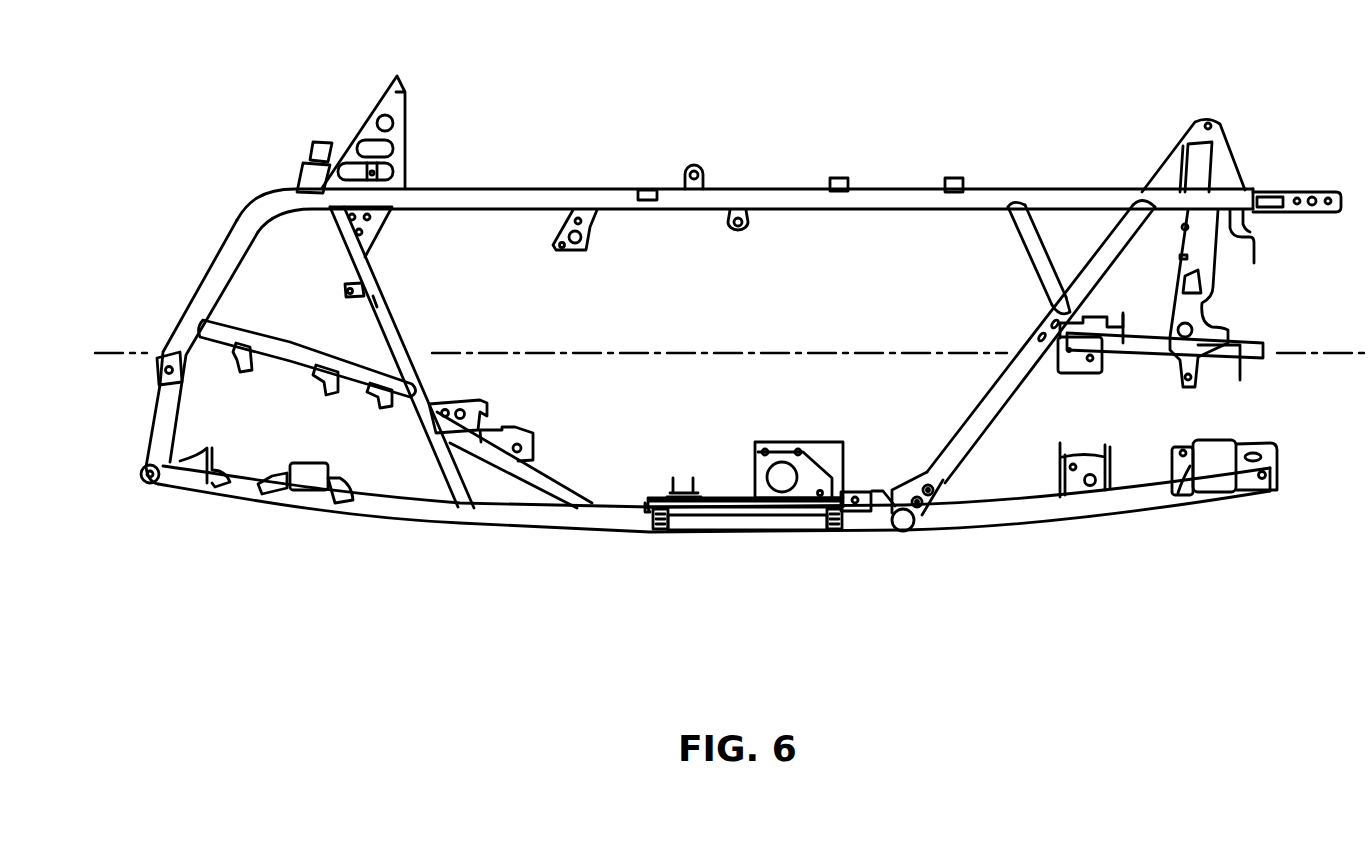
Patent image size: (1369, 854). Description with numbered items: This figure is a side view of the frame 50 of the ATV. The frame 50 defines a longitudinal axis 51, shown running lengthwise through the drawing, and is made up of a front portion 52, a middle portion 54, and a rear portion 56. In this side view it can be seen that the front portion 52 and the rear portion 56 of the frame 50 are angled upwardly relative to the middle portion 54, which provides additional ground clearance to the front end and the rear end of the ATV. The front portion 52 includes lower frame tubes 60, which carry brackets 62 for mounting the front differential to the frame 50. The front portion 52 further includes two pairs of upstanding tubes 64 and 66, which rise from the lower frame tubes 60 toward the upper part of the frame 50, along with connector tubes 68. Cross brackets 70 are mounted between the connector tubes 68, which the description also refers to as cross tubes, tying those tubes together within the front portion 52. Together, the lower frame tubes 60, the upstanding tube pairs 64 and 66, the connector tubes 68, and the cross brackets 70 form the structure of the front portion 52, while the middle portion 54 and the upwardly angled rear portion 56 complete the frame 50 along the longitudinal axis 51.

The frame 50 is at (885, 112).
The longitudinal axis 51 is at (787, 350).
The front portion 52 is at (305, 497).
The middle portion 54 is at (748, 523).
The rear portion 56 is at (1082, 507).
The lower frame tubes 60 is at (418, 517).
The brackets 62 is at (262, 505).
The upstanding tube pair 64 is at (220, 270).
The upstanding tube pair 66 is at (455, 470).
The connector tubes 68 is at (286, 347).
The cross brackets 70 is at (318, 380).